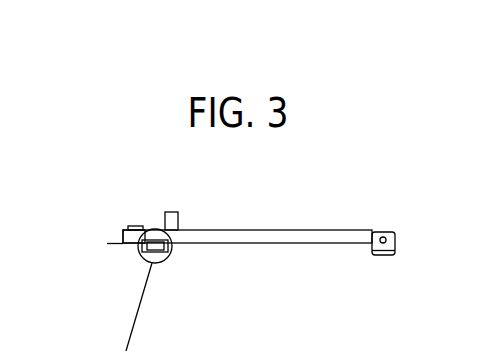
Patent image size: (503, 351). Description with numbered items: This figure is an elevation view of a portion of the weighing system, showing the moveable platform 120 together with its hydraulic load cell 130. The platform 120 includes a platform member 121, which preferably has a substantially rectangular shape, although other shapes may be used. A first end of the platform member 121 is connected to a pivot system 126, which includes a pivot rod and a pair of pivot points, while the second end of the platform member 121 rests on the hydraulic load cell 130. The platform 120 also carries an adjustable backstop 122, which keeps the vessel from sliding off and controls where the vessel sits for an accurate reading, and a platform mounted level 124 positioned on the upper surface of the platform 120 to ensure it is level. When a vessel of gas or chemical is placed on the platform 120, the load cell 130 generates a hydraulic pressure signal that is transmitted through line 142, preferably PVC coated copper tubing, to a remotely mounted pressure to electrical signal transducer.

The moveable platform 120 is at (353, 229).
The platform member 121 is at (285, 229).
The adjustable backstop 122 is at (179, 218).
The platform mounted level 124 is at (137, 228).
The pivot system 126 is at (395, 241).
The hydraulic load cell 130 is at (170, 259).
The line 142 is at (118, 250).